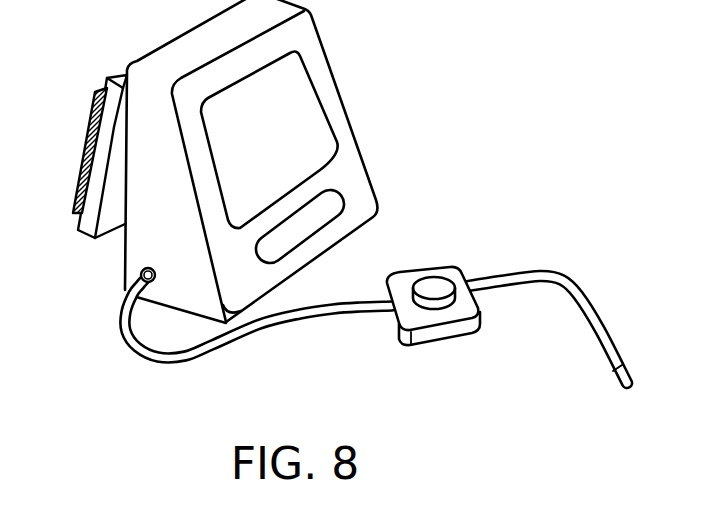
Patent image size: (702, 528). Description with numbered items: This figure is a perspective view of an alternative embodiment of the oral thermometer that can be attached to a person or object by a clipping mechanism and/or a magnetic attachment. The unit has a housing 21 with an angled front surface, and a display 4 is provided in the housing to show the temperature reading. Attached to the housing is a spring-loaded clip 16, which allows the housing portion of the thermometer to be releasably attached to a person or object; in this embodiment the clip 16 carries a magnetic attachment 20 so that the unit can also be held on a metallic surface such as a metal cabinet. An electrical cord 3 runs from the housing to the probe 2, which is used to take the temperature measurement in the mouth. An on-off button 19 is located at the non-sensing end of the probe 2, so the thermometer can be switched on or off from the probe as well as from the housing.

The probe 2 is at (562, 272).
The electrical cord 3 is at (333, 302).
The display 4 is at (310, 116).
The spring-loaded clip 16 is at (80, 230).
The on-off button 19 is at (440, 291).
The magnetic attachment 20 is at (89, 117).
The housing 21 is at (182, 297).